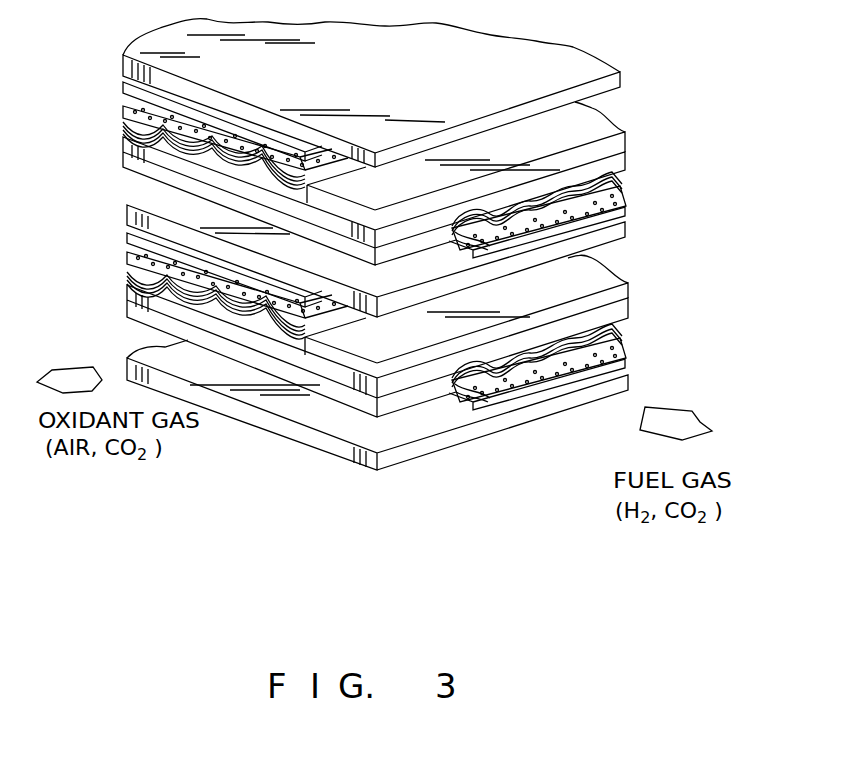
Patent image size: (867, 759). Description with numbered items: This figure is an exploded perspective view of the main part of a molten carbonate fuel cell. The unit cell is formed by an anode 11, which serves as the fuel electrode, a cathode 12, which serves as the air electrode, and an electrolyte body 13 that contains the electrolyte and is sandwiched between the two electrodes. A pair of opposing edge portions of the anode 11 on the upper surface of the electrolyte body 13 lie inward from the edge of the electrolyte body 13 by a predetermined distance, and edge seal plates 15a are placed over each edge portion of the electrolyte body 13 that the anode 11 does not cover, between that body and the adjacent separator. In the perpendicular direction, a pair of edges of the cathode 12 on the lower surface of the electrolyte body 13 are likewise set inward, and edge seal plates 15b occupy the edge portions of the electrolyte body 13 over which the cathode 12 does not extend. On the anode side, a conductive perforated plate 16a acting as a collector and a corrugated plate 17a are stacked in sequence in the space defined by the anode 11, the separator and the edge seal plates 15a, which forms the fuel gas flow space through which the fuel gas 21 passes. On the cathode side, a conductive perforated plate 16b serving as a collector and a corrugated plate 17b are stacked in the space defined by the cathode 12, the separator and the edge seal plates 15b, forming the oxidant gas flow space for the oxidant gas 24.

The anode 11 is at (623, 216).
The cathode 12 is at (127, 238).
The electrolyte body 13 is at (608, 240).
The edge seal plates 15a is at (390, 252).
The edge seal plates 15b is at (343, 360).
The conductive perforated plate 16a is at (628, 190).
The conductive perforated plate 16b is at (130, 258).
The corrugated plate 17a is at (614, 175).
The corrugated plate 17b is at (130, 290).
The fuel gas 21 is at (700, 421).
The oxidant gas 24 is at (52, 370).